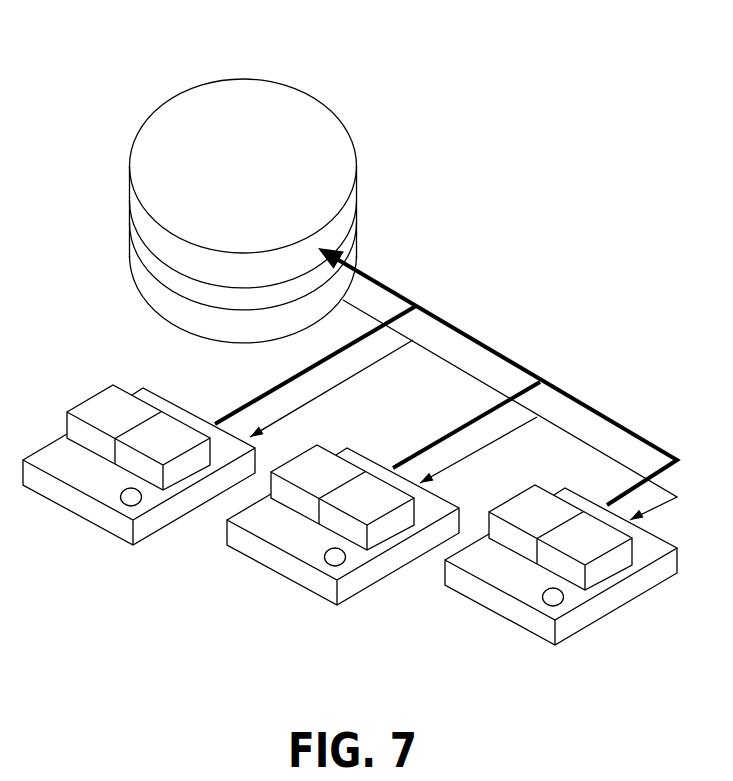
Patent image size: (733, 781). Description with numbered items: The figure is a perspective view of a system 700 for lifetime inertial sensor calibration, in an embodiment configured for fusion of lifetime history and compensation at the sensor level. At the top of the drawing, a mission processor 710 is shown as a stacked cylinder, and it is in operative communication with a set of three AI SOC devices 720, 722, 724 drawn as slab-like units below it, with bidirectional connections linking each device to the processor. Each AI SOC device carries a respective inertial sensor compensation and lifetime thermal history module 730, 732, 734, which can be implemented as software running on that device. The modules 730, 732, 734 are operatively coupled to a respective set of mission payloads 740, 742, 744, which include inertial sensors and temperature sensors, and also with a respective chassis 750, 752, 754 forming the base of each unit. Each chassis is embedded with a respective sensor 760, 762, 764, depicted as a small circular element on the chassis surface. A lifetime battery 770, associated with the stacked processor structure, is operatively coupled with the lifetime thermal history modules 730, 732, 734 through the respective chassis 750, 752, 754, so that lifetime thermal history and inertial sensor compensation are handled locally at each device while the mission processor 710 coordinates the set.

The system 700 is at (163, 55).
The mission processor 710 is at (335, 160).
The lifetime battery 770 is at (132, 280).
The AI SOC device 720 is at (72, 476).
The AI SOC device 722 is at (340, 531).
The AI SOC device 724 is at (558, 571).
The inertial sensor compensation and lifetime thermal history module 730 is at (168, 430).
The inertial sensor compensation and lifetime thermal history module 732 is at (377, 540).
The inertial sensor compensation and lifetime thermal history module 734 is at (613, 583).
The mission payload 740 is at (82, 403).
The mission payload 742 is at (318, 469).
The mission payload 744 is at (529, 509).
The chassis 750 is at (160, 517).
The chassis 752 is at (398, 576).
The chassis 754 is at (616, 616).
The sensor 760 is at (121, 503).
The sensor 762 is at (314, 595).
The sensor 764 is at (532, 635).